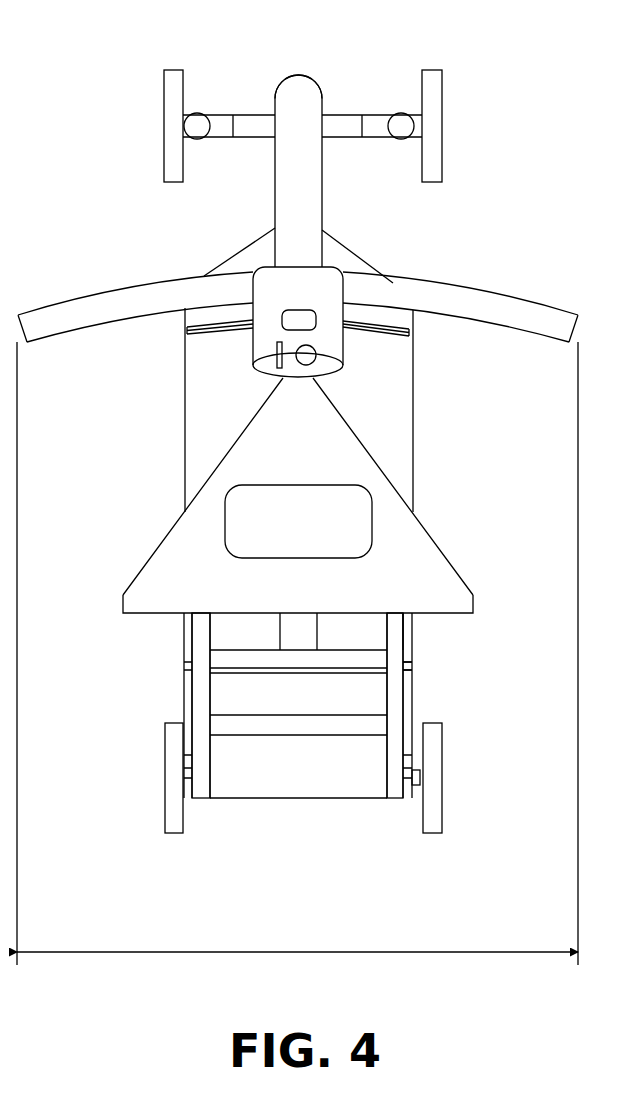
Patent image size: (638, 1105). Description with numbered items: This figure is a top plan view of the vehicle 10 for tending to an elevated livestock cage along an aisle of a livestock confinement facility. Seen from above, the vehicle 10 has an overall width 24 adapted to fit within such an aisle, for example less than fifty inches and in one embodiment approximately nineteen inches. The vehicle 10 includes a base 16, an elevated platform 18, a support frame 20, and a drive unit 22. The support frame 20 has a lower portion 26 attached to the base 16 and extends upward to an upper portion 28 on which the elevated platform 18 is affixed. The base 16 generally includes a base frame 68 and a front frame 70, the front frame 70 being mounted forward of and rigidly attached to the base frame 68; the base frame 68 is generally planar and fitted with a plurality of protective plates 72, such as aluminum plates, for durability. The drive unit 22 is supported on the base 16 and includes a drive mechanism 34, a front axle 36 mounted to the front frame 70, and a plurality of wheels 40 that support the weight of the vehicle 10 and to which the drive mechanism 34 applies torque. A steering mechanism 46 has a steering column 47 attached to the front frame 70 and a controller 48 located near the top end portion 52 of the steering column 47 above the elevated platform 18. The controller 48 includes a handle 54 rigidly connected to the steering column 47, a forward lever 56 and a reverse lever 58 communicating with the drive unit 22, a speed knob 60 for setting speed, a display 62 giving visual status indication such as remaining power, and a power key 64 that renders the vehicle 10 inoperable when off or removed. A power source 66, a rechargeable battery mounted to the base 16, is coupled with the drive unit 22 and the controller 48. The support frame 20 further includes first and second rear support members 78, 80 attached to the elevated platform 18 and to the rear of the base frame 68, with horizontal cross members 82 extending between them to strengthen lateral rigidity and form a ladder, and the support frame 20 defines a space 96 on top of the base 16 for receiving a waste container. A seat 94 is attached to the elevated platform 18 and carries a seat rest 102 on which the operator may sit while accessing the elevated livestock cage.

The vehicle 10 is at (552, 45).
The base 16 is at (307, 410).
The elevated platform 18 is at (158, 555).
The support frame 20 is at (117, 668).
The drive unit 22 is at (415, 703).
The overall width 24 is at (300, 960).
The lower portion 26 is at (395, 805).
The upper portion 28 is at (185, 622).
The drive mechanism 34 is at (412, 678).
The front axle 36 is at (216, 123).
The wheels 40 is at (163, 83).
The steering mechanism 46 is at (299, 65).
The steering column 47 is at (275, 187).
The controller 48 is at (253, 258).
The top end portion 52 is at (325, 257).
The handle 54 is at (67, 300).
The forward lever 56 is at (392, 337).
The reverse lever 58 is at (205, 336).
The speed knob 60 is at (338, 368).
The display 62 is at (297, 310).
The power key 64 is at (273, 354).
The power source 66 is at (410, 643).
The base frame 68 is at (415, 386).
The front frame 70 is at (346, 123).
The protective plates 72 is at (368, 440).
The first rear support member 78 is at (392, 693).
The second rear support member 80 is at (195, 680).
The horizontal cross members 82 is at (278, 658).
The seat 94 is at (232, 565).
The space 96 is at (198, 397).
The seat rest 102 is at (276, 533).